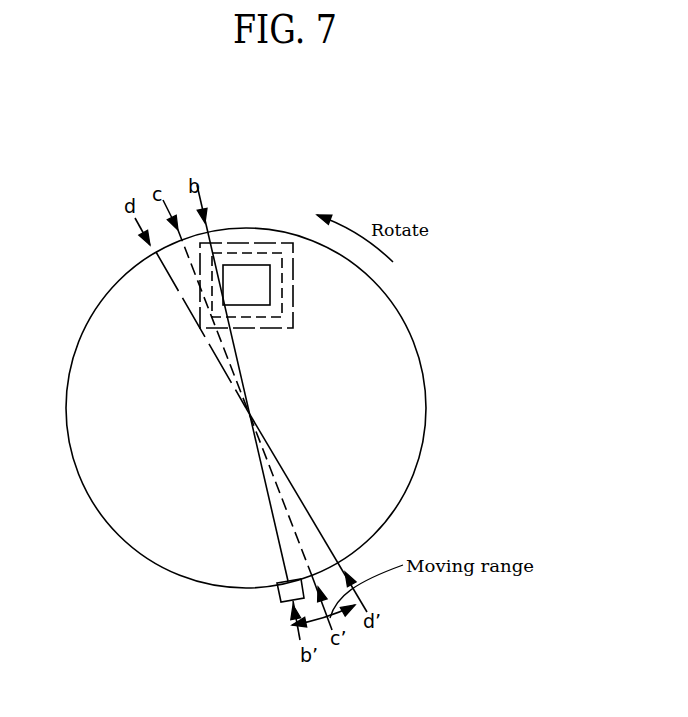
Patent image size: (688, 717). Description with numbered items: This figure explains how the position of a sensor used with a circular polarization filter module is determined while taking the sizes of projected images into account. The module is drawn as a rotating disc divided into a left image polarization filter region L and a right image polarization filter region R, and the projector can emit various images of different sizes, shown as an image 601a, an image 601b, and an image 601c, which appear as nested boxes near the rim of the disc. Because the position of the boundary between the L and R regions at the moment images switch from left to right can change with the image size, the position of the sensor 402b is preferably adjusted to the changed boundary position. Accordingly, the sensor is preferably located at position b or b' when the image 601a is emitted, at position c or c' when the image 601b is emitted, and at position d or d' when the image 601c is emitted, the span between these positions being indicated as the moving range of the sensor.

The sensor 402b is at (279, 602).
The image 601a is at (239, 264).
The image 601b is at (248, 253).
The image 601c is at (270, 243).